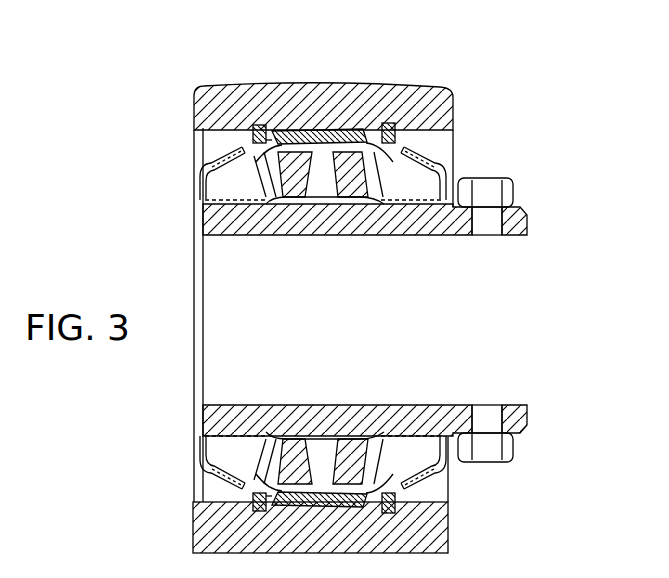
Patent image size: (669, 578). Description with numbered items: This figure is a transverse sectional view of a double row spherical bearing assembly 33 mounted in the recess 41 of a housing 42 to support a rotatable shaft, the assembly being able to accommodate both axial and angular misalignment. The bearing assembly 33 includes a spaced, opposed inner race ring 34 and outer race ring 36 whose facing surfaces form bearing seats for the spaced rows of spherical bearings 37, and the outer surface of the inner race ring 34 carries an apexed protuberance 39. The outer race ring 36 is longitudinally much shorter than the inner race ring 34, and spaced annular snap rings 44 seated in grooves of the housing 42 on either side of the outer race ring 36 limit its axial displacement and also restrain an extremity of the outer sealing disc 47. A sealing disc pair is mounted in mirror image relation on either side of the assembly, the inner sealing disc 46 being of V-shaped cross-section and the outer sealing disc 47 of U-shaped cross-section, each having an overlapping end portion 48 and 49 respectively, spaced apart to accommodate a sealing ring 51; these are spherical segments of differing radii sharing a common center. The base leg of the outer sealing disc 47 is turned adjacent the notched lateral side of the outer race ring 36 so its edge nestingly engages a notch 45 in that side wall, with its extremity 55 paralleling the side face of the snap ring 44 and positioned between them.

The bearing assembly 33 is at (447, 160).
The inner race ring 34 is at (530, 221).
The outer race ring 36 is at (342, 88).
The spherical bearings 37 is at (303, 185).
The apexed protuberance 39 is at (304, 441).
The recess 41 is at (208, 153).
The housing 42 is at (378, 99).
The annular snap rings 44 is at (262, 130).
The notch 45 is at (304, 130).
The inner sealing disc 46 is at (197, 197).
The outer sealing disc 47 is at (248, 162).
The overlapping end portion 48 is at (195, 122).
The overlapping end portion 49 is at (232, 200).
The sealing ring 51 is at (230, 468).
The extremity 55 is at (272, 128).